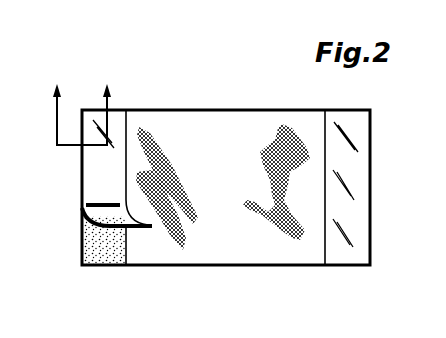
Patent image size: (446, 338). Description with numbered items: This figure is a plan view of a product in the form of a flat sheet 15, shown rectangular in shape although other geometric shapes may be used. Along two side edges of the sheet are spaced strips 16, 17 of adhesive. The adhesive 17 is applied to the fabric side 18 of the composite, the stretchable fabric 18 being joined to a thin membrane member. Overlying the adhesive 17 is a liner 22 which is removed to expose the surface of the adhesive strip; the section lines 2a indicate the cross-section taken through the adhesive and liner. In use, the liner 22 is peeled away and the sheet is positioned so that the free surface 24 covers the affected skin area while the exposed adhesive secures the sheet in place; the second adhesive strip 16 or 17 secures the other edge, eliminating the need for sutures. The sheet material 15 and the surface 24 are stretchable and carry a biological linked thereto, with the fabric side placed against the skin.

The section line 2a- 2a is at (79, 103).
The flat sheet 15 is at (296, 106).
The adhesive strip 16 is at (352, 176).
The adhesive strip 17 is at (87, 246).
The stretchable fabric 18 is at (178, 246).
The liner 22 is at (83, 183).
The free surface 24 is at (201, 126).